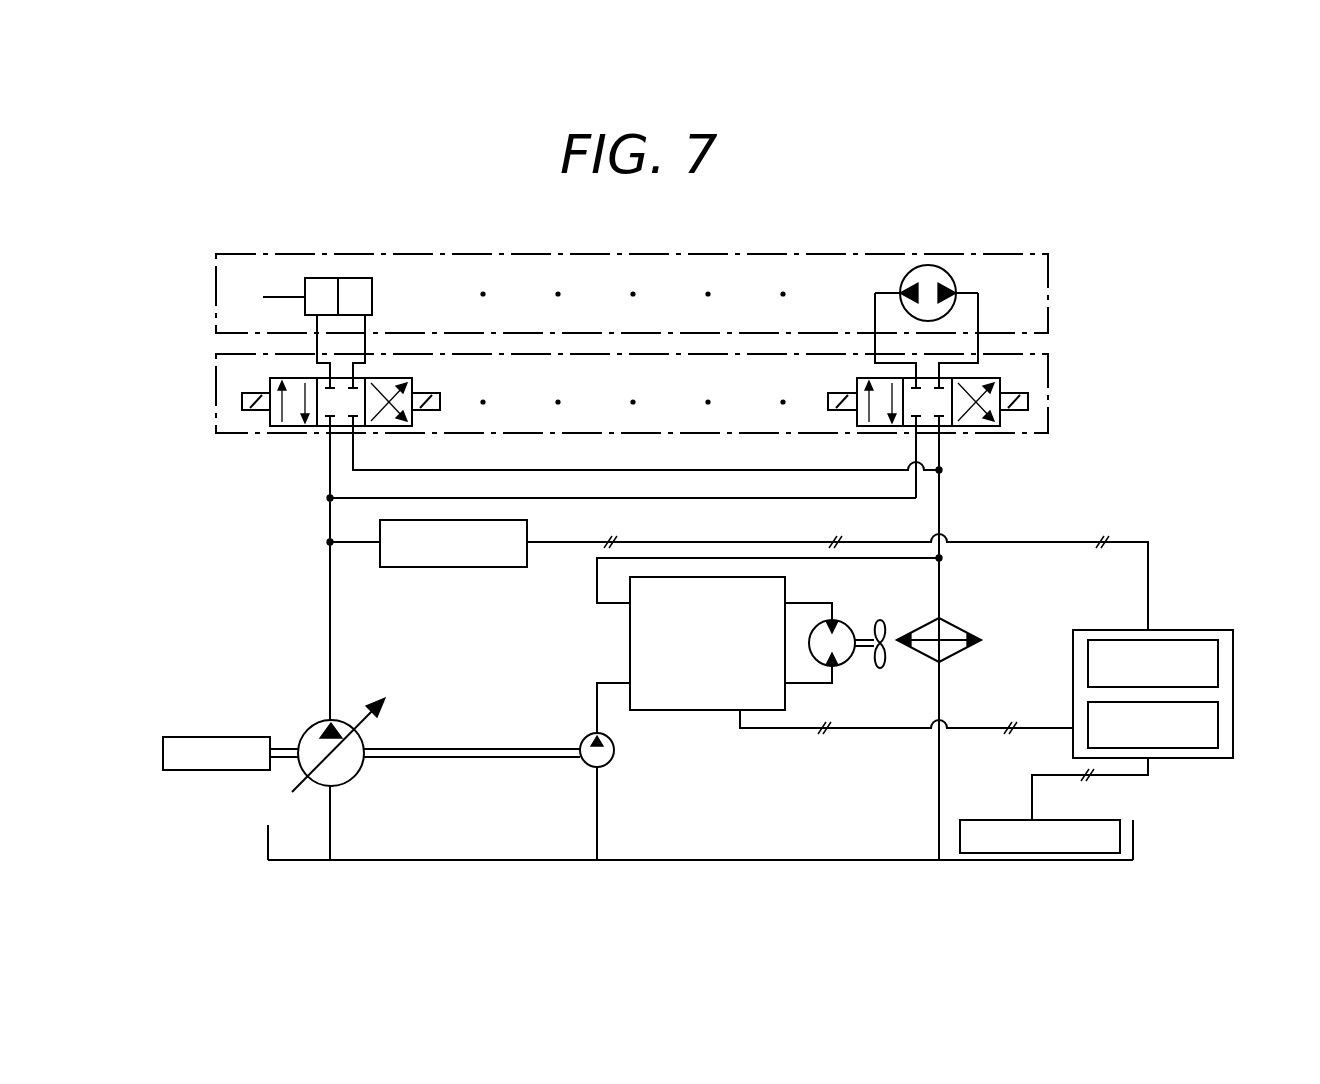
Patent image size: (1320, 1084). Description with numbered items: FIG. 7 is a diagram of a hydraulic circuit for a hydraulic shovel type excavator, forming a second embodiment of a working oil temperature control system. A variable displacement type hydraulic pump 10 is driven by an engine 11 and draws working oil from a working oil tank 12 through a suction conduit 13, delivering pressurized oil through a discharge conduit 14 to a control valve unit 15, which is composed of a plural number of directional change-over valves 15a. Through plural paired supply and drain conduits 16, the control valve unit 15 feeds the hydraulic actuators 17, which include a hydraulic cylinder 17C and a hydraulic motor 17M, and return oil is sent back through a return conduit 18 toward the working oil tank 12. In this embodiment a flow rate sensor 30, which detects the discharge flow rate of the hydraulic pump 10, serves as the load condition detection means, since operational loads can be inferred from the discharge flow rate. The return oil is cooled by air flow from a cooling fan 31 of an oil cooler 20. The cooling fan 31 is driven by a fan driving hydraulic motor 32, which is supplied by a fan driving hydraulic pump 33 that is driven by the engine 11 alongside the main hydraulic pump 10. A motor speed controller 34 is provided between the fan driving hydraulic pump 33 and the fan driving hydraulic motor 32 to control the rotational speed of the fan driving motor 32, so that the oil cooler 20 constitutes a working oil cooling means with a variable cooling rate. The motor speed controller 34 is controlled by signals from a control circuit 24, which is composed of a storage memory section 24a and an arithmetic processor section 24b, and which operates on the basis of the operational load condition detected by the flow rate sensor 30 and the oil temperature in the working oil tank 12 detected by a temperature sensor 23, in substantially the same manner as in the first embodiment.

The hydraulic pump 10 is at (360, 772).
The engine 11 is at (170, 737).
The working oil tank 12 is at (805, 862).
The suction conduit 13 is at (331, 838).
The discharge conduit 14 is at (330, 612).
The control valve unit 15 is at (1048, 383).
The directional change-over valve 15a is at (292, 432).
The supply and drain conduits 16 is at (317, 328).
The hydraulic actuator 17 is at (1048, 283).
The hydraulic cylinder 17C is at (355, 277).
The hydraulic motor 17M is at (928, 265).
The return conduit 18 is at (939, 498).
The oil cooler 20 is at (955, 625).
The temperature sensor 23 is at (1120, 848).
The control circuit 24 is at (1073, 668).
The storage memory section 24a is at (1208, 750).
The arithmetic processor section 24b is at (1195, 642).
The flow rate sensor 30 is at (418, 567).
The cooling fan 31 is at (878, 665).
The fan driving hydraulic motor 32 is at (848, 630).
The fan driving hydraulic pump 33 is at (614, 760).
The motor speed controller 34 is at (630, 630).